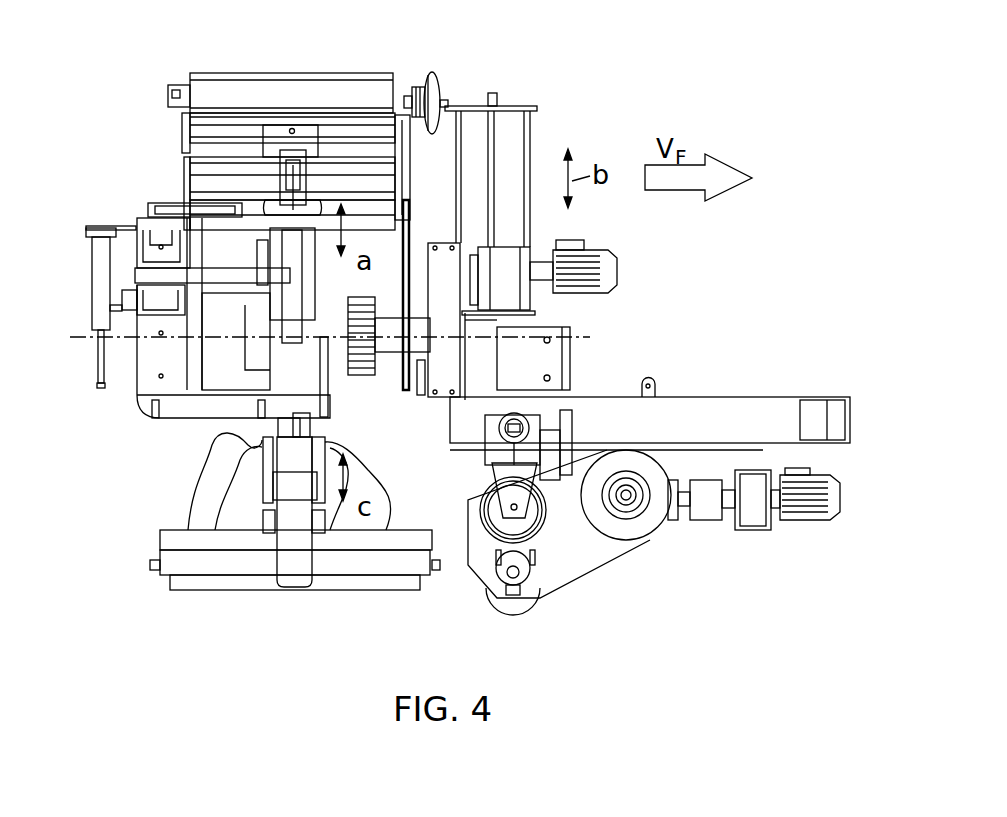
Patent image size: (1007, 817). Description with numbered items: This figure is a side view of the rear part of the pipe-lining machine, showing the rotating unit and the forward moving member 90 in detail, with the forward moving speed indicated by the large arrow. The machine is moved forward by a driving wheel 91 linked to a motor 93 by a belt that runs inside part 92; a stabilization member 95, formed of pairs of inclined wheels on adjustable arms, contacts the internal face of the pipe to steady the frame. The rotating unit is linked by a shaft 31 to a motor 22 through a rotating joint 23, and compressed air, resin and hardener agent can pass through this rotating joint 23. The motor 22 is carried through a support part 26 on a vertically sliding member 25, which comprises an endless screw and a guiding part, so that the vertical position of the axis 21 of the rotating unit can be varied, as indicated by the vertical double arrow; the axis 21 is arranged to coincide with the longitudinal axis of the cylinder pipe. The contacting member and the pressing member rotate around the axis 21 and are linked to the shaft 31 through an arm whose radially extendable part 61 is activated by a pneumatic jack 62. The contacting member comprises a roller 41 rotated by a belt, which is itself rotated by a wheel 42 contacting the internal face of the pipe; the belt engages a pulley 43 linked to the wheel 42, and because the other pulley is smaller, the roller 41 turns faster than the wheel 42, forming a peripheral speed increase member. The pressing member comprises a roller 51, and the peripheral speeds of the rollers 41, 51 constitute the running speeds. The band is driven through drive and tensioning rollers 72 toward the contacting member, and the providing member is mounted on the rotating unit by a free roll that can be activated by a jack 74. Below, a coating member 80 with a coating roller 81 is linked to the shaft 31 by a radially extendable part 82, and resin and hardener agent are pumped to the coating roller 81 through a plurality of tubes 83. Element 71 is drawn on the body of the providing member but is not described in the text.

The axis 21 is at (585, 338).
The motor 22 is at (605, 268).
The rotating joint 23 is at (445, 360).
The vertically sliding member 25 is at (515, 148).
The support part 26 is at (535, 313).
The shaft 31 is at (343, 372).
The roller 41 is at (310, 77).
The wheel 42 is at (432, 72).
The pulley 43 is at (421, 88).
The roller 51 is at (264, 97).
The radially extendable part 61 is at (280, 180).
The pneumatic jack 62 is at (290, 288).
The housing body 71 is at (265, 310).
The drive and tensioning rollers 72 is at (185, 180).
The jack 74 is at (97, 277).
The coating member 80 is at (152, 588).
The coating roller 81 is at (220, 590).
The radially extendable part 82 is at (297, 540).
The tubes 83 is at (188, 512).
The forward moving member 90 is at (720, 546).
The driving wheel 91 is at (510, 603).
The part 92 is at (583, 578).
The motor 93 is at (800, 522).
The stabilization member 95 is at (546, 495).